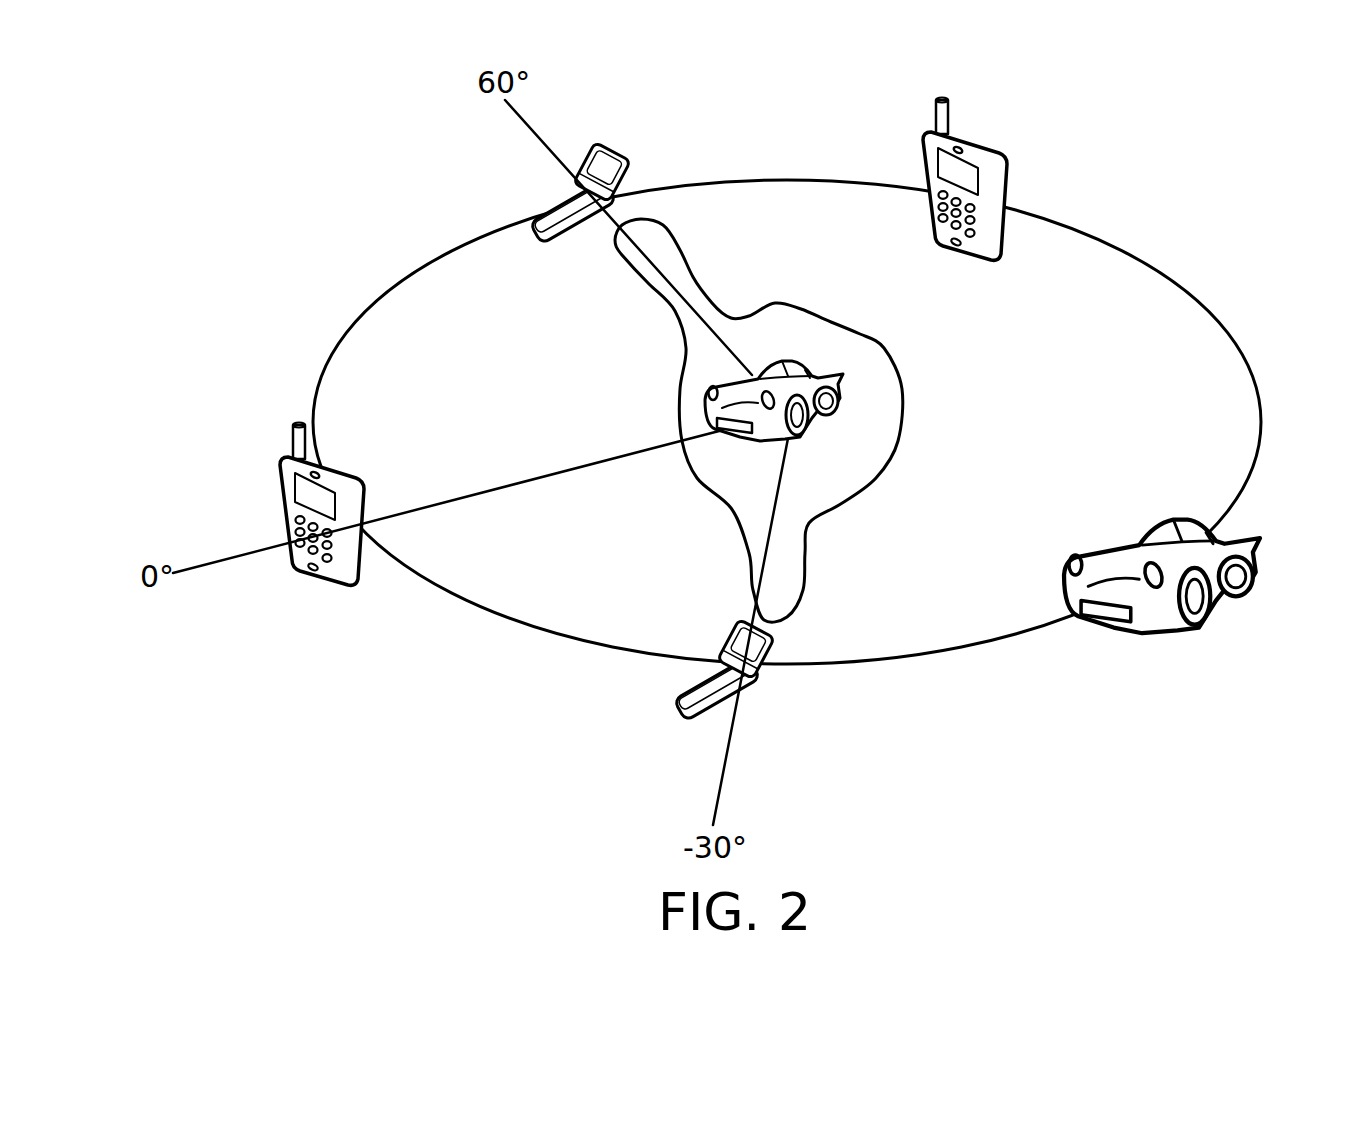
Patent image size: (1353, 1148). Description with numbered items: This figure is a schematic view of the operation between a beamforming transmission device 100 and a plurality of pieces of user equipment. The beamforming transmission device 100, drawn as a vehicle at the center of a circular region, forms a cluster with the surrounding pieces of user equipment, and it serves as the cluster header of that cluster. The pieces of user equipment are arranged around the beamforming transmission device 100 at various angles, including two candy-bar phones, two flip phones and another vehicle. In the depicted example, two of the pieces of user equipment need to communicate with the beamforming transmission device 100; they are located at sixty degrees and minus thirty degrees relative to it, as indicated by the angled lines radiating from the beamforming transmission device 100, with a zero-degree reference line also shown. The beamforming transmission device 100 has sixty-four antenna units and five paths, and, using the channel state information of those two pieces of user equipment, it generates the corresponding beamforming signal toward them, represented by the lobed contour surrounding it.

The beamforming transmission device 100 is at (794, 359).